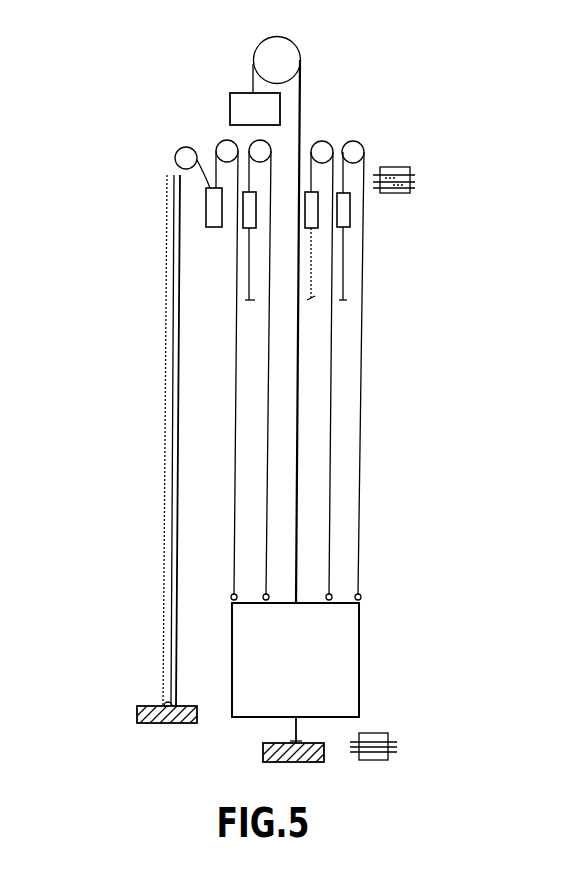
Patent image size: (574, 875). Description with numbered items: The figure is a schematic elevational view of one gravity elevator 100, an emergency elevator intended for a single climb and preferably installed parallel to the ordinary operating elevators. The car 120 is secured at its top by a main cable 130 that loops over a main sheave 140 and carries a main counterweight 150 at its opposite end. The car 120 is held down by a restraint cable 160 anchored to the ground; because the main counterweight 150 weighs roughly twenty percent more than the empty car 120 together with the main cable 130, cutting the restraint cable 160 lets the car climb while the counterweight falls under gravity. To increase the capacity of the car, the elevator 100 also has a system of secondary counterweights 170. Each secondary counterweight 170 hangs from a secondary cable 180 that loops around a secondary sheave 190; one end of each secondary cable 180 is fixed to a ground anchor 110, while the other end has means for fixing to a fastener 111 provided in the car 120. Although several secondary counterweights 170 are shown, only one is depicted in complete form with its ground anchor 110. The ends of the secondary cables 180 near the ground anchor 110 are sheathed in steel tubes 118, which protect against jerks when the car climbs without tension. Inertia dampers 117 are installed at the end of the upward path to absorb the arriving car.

The gravity elevator 100 is at (120, 454).
The ground anchor 110 is at (137, 713).
The fastener 111 is at (264, 595).
The inertia damper 117 is at (412, 170).
The steel tube 118 is at (163, 498).
The car 120 is at (345, 663).
The main cable 130 is at (297, 448).
The main sheave 140 is at (292, 62).
The main counterweight 150 is at (242, 100).
The restraint cable 160 is at (287, 727).
The secondary counterweight 170 is at (210, 213).
The secondary cable 180 is at (237, 330).
The secondary sheave 190 is at (223, 147).